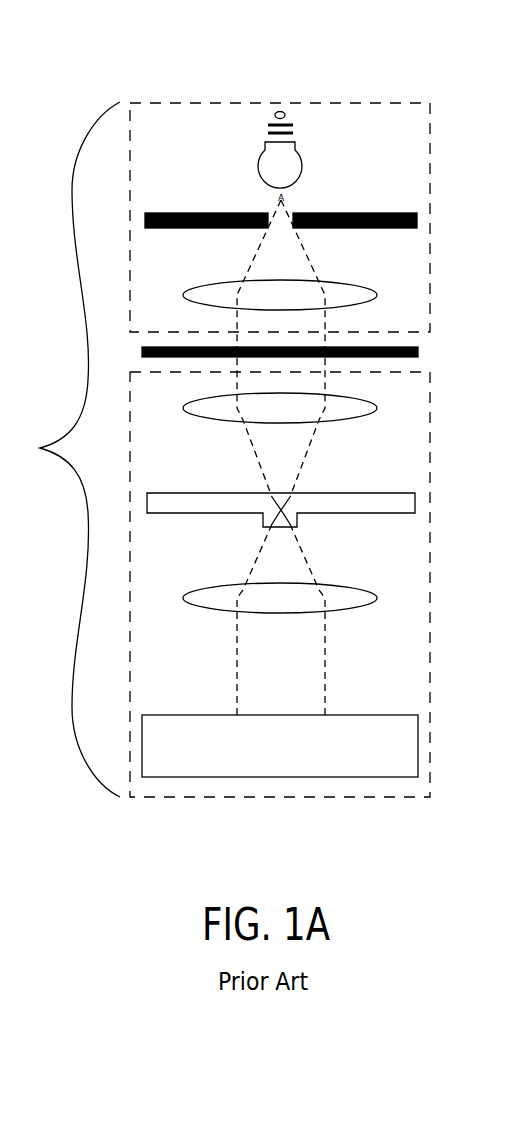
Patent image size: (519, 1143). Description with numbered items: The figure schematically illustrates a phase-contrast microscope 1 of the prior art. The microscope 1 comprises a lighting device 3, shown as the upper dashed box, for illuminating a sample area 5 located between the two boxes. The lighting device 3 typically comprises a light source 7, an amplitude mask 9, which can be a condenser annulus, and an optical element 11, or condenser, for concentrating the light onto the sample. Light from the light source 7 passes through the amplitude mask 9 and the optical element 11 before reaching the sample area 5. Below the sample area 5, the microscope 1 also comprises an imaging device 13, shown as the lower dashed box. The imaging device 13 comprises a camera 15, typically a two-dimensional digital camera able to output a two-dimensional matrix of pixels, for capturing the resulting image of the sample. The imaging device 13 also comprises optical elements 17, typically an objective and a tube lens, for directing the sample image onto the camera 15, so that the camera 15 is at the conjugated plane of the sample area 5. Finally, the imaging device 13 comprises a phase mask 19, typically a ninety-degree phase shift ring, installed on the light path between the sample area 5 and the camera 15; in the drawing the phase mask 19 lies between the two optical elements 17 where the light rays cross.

The phase-contrast microscope 1 is at (70, 449).
The lighting device 3 is at (160, 101).
The sample area 5 is at (400, 346).
The light source 7 is at (297, 147).
The amplitude mask 9 is at (398, 212).
The optical element 11 is at (379, 290).
The imaging device 13 is at (182, 800).
The camera 15 is at (401, 713).
The optical elements 17 is at (374, 414).
The phase mask 19 is at (171, 492).